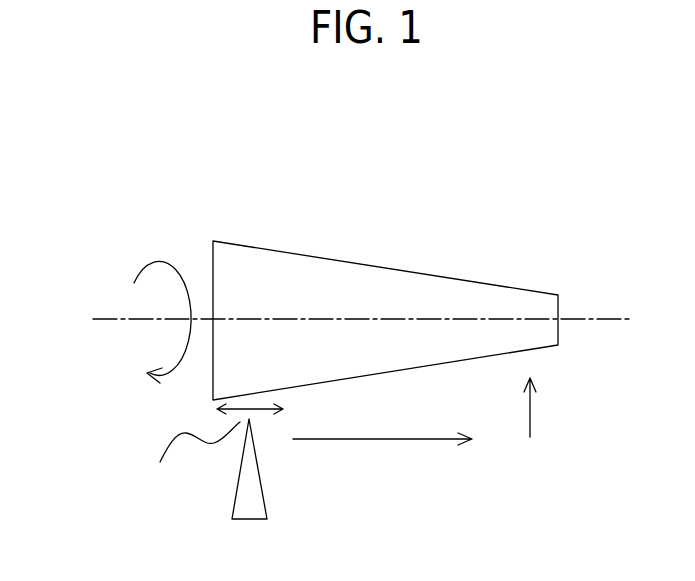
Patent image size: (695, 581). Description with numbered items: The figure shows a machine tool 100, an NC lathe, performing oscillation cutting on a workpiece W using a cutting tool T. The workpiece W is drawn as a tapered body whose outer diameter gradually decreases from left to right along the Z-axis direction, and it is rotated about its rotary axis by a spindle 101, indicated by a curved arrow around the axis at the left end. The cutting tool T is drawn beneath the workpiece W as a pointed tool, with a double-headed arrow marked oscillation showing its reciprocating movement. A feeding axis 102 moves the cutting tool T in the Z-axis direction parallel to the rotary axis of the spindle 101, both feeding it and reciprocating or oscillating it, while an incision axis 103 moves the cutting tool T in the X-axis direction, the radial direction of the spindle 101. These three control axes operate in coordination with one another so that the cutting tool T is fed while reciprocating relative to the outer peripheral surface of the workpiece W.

The machine tool 100 is at (393, 212).
The spindle 101 is at (104, 319).
The feeding axis 102 is at (440, 442).
The incision axis 103 is at (528, 427).
The workpiece W is at (527, 291).
The cutting tool T is at (267, 505).